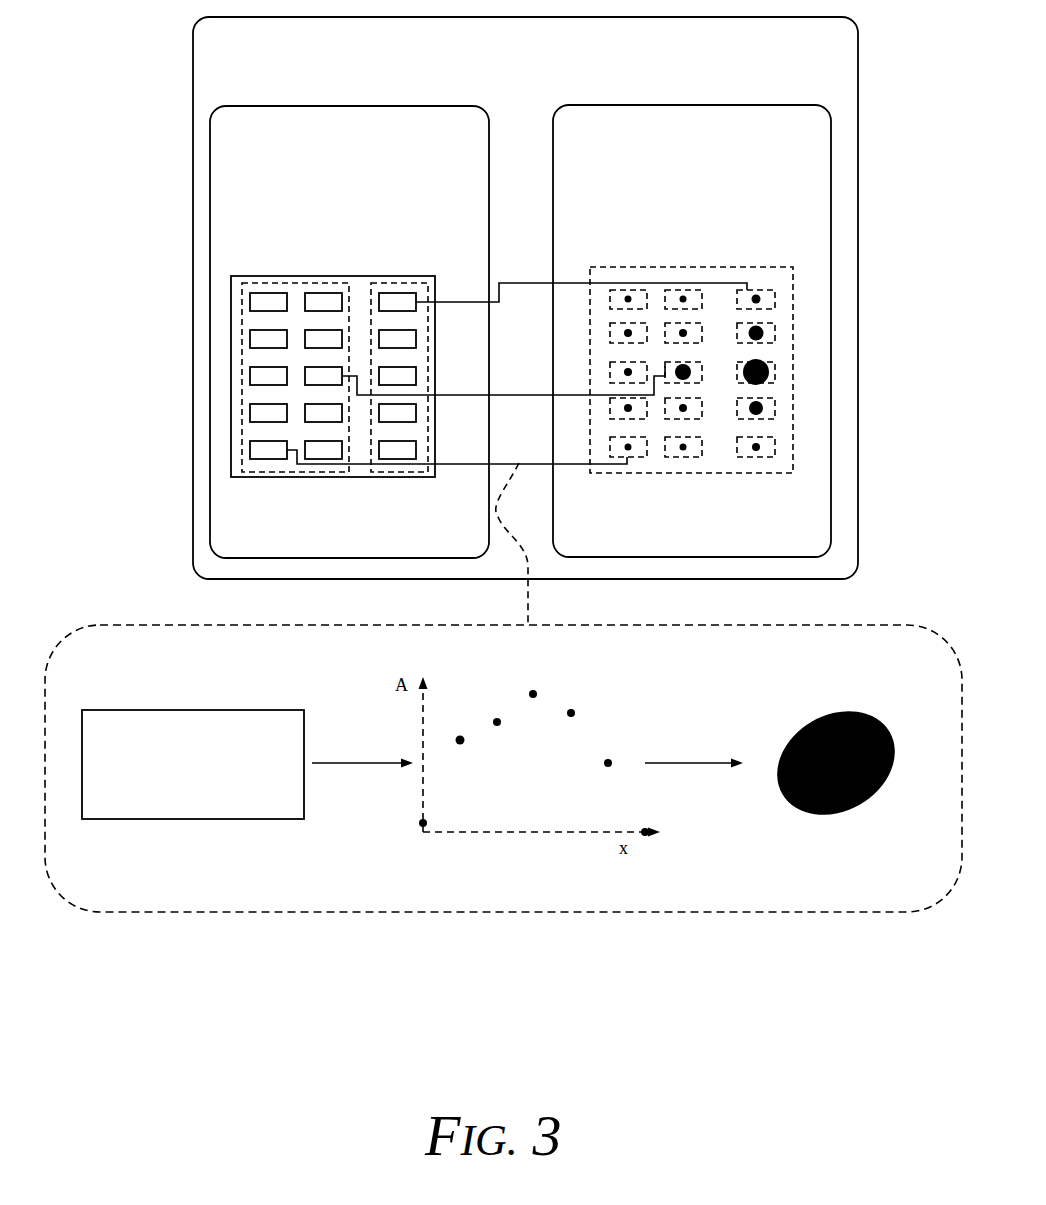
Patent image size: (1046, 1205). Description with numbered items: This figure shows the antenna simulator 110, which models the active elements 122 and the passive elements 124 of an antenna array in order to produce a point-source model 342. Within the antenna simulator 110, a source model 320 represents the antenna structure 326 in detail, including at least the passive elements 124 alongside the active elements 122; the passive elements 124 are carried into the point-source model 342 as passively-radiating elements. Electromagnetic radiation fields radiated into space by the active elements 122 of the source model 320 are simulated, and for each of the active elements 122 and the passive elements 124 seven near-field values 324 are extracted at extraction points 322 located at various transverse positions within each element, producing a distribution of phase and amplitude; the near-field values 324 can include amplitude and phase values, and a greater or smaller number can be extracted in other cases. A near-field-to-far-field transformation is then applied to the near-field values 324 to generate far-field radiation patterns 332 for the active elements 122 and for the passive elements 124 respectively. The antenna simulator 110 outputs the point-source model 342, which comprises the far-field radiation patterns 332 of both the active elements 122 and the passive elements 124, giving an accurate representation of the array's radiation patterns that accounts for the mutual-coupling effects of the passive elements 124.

The antenna simulator 110 is at (525, 298).
The source model 320 is at (349, 332).
The point-source model 342 is at (692, 331).
The antenna structure 326 is at (224, 446).
The active elements 122 is at (398, 275).
The passive elements 124 is at (266, 482).
The extraction points 322 is at (153, 786).
The near-field values 324 is at (457, 759).
The far-field radiation patterns 332 is at (820, 700).